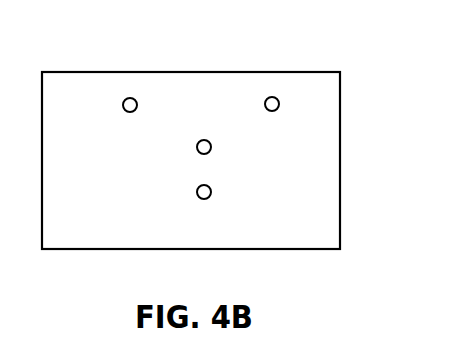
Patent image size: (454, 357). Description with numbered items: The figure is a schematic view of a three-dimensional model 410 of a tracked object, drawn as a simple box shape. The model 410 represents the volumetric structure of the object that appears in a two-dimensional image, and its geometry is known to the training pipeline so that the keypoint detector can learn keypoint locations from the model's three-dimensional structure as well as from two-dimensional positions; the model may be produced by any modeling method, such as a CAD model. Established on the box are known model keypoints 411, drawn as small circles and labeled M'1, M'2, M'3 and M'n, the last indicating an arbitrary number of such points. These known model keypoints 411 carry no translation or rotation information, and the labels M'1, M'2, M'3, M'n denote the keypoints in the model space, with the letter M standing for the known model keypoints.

The 3D model 410 is at (181, 72).
The known 3D model keypoints 411 is at (241, 114).
The known 3D model keypoint M'1 is at (109, 110).
The known 3D model keypoint M'2 is at (250, 107).
The known 3D model keypoint M'3 is at (183, 146).
The known 3D model keypoint M'n is at (183, 191).